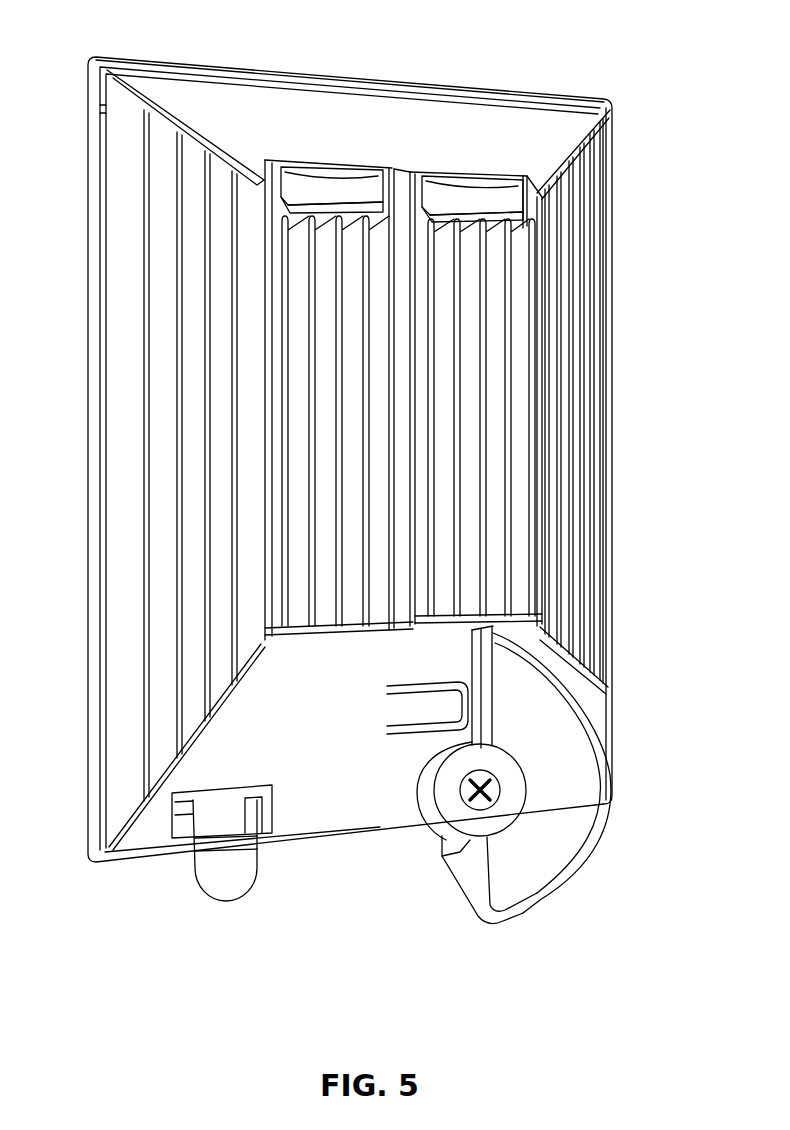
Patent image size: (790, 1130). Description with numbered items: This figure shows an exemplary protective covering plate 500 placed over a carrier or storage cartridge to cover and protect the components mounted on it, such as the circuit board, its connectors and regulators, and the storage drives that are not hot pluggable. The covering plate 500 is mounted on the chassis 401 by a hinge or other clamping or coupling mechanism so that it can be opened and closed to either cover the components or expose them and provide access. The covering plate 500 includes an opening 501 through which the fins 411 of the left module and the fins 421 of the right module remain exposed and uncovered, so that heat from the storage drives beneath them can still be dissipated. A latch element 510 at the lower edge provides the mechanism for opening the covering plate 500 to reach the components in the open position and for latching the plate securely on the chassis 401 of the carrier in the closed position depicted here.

The covering plate 500 is at (175, 88).
The chassis 401 is at (497, 93).
The opening 501 is at (402, 183).
The fins 411 is at (295, 498).
The fins 421 is at (532, 480).
The latch element 510 is at (545, 900).